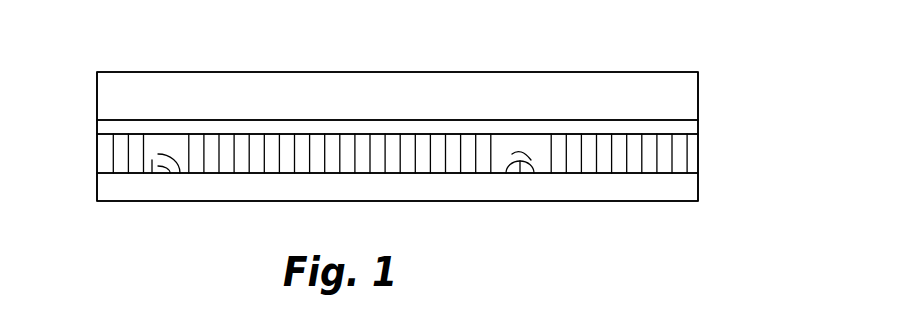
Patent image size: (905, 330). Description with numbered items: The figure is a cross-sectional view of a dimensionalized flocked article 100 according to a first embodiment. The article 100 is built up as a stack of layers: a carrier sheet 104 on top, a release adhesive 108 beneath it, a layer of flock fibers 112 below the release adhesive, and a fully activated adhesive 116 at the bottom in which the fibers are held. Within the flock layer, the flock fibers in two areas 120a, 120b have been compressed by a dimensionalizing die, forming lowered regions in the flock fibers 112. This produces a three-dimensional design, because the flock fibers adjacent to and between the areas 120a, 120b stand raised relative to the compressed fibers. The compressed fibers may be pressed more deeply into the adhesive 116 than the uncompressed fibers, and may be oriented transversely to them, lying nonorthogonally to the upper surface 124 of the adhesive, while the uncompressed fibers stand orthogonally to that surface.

The article 100 is at (62, 168).
The carrier sheet 104 is at (698, 93).
The release adhesive 108 is at (698, 130).
The flock fibers 112 is at (698, 154).
The fully activated adhesive 116 is at (698, 188).
The area of compressed flock fibers 120a is at (162, 147).
The area of compressed flock fibers 120b is at (515, 142).
The upper surface of the adhesive 124 is at (234, 173).